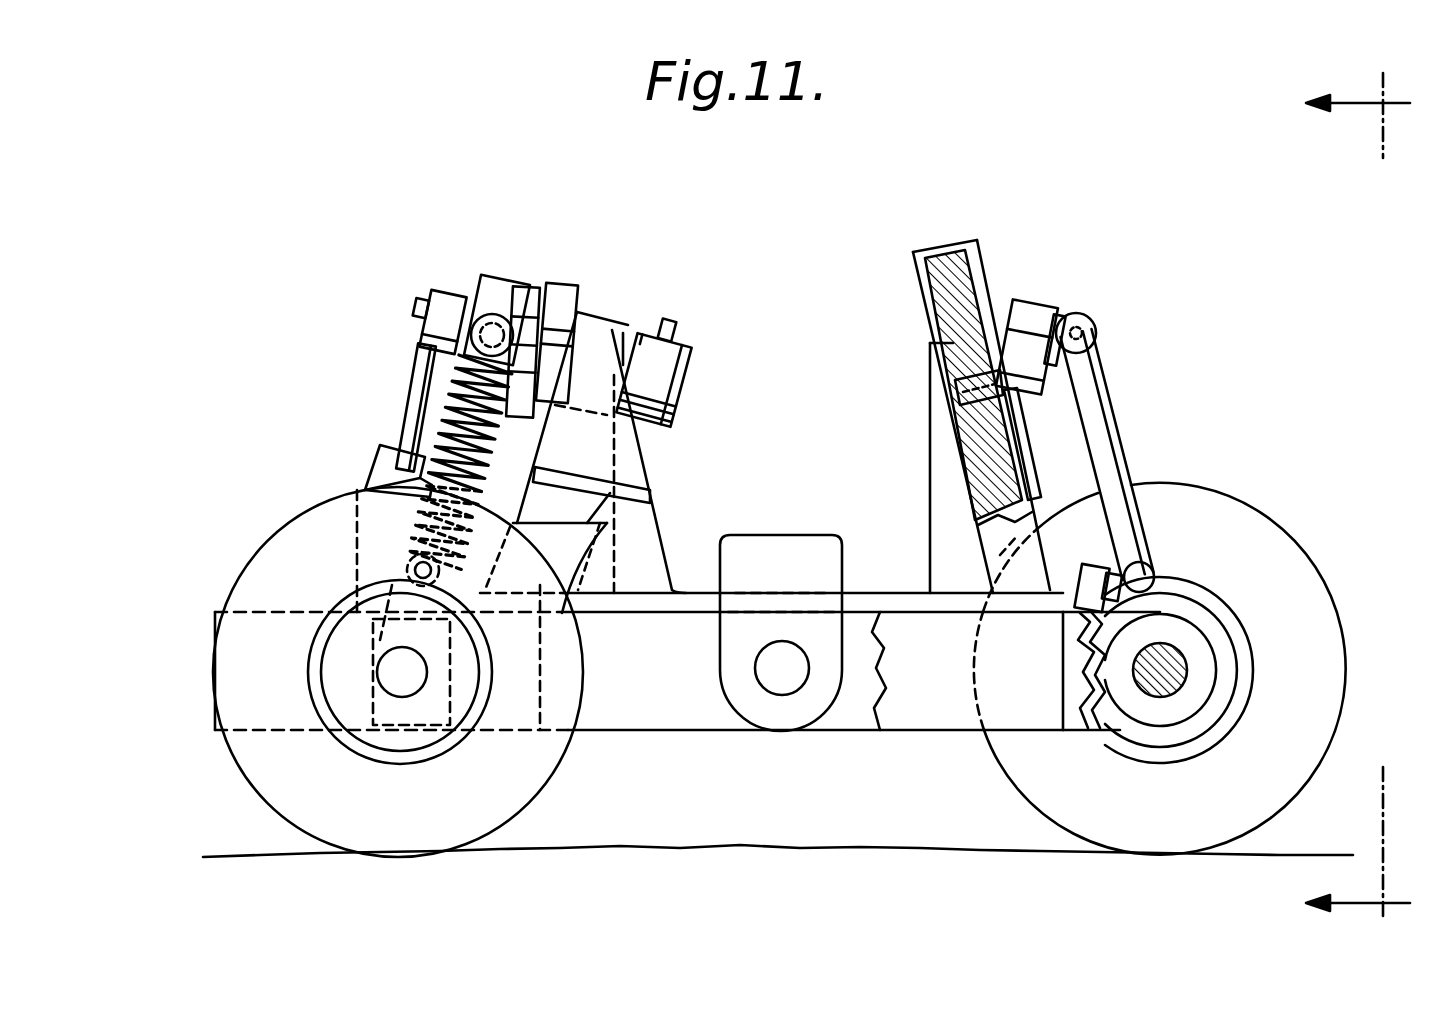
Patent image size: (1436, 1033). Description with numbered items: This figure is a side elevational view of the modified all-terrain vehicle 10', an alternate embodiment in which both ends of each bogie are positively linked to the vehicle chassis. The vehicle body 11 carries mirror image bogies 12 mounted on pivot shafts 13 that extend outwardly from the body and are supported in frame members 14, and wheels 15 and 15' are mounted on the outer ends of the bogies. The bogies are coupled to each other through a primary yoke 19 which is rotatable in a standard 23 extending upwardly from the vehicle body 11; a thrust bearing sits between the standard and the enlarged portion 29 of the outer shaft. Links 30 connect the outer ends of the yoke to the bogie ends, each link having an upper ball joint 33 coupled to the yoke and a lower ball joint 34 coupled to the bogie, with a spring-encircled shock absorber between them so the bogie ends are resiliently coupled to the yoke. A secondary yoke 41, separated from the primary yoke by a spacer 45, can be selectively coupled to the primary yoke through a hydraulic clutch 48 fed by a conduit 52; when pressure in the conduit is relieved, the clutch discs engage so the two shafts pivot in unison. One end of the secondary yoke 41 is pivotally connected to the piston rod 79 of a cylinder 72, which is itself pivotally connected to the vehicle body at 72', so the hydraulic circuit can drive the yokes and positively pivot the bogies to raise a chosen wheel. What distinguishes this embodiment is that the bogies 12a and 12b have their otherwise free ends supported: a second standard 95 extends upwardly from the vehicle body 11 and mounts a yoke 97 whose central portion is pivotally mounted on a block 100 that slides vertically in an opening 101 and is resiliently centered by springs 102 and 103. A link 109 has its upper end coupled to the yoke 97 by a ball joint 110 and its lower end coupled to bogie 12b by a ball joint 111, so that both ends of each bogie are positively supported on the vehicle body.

The all-terrain vehicle 10' is at (891, 167).
The vehicle body 11 is at (888, 595).
The bogie 12 is at (1366, 506).
The bogie 12a is at (670, 715).
The bogie 12b is at (1120, 733).
The pivot shaft 13 is at (786, 690).
The frame member 14 is at (812, 535).
The wheel 15 is at (355, 672).
The wheel 15' is at (1199, 669).
The primary yoke 19 is at (563, 283).
The standard 23 is at (650, 515).
The enlarged portion 29 is at (643, 337).
The link 30 is at (453, 387).
The upper ball joint 33 is at (478, 290).
The ball joint 34 is at (405, 552).
The secondary yoke 41 is at (510, 277).
The spacer 45 is at (535, 285).
The hydraulic clutch 48 is at (663, 364).
The conduit 52 is at (676, 332).
The cylinder 72 is at (357, 471).
The pivotal connection 72' is at (382, 610).
The piston rod 79 is at (447, 290).
The standard 95 is at (940, 460).
The yoke 97 is at (1018, 300).
The block 100 is at (930, 347).
The opening 101 is at (990, 240).
The spring 102 is at (915, 282).
The spring 103 is at (995, 460).
The link 109 is at (1113, 415).
The ball joint 110 is at (1097, 318).
The ball joint 111 is at (1140, 566).